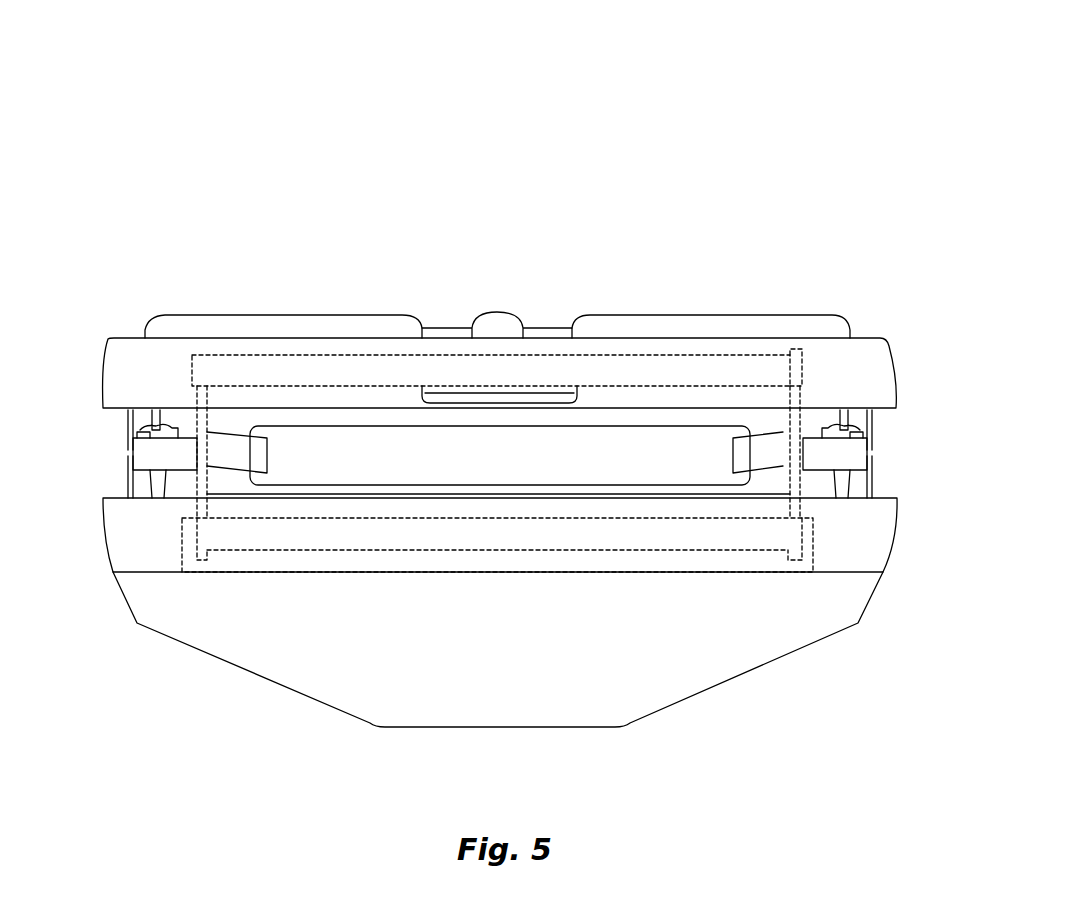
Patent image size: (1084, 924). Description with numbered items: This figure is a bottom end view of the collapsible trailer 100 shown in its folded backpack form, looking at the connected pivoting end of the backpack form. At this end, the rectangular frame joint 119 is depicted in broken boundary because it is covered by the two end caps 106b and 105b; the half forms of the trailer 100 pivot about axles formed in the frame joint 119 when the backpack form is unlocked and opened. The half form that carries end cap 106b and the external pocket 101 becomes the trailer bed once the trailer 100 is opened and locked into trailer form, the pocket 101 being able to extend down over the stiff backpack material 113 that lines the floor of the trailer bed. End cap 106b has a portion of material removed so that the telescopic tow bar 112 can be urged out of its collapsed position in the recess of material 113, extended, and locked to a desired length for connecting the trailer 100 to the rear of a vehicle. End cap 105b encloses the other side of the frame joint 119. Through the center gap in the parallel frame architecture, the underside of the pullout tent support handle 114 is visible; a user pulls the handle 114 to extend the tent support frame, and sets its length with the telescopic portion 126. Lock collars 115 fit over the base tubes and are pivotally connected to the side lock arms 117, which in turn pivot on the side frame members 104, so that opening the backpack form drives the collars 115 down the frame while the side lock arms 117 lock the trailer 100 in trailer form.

The collapsible trailer 100 is at (518, 130).
The external pocket 101 is at (450, 704).
The side frame member 104 is at (872, 356).
The end cap 105b is at (238, 354).
The end cap 106b is at (163, 553).
The tow bar 112 is at (535, 328).
The stiff backpack material 113 is at (695, 313).
The pullout tent support handle 114 is at (370, 463).
The lock collar 115 is at (130, 423).
The side lock arm 117 is at (874, 436).
The rectangular frame joint 119 is at (512, 366).
The telescopic portion 126 is at (779, 455).